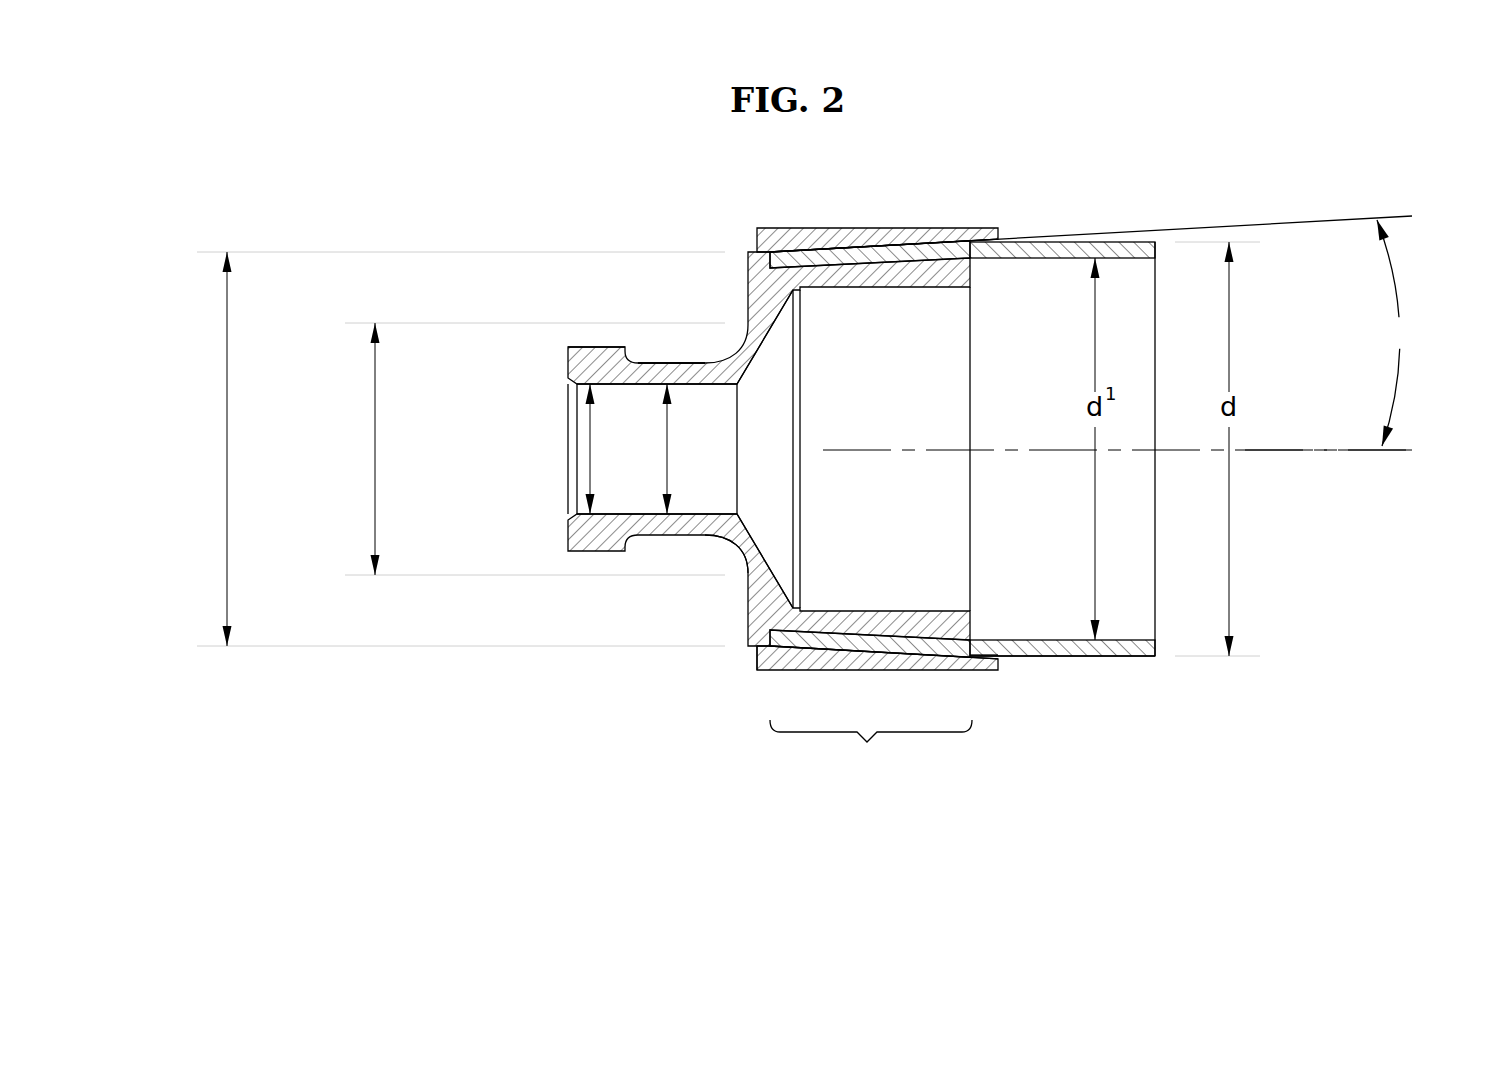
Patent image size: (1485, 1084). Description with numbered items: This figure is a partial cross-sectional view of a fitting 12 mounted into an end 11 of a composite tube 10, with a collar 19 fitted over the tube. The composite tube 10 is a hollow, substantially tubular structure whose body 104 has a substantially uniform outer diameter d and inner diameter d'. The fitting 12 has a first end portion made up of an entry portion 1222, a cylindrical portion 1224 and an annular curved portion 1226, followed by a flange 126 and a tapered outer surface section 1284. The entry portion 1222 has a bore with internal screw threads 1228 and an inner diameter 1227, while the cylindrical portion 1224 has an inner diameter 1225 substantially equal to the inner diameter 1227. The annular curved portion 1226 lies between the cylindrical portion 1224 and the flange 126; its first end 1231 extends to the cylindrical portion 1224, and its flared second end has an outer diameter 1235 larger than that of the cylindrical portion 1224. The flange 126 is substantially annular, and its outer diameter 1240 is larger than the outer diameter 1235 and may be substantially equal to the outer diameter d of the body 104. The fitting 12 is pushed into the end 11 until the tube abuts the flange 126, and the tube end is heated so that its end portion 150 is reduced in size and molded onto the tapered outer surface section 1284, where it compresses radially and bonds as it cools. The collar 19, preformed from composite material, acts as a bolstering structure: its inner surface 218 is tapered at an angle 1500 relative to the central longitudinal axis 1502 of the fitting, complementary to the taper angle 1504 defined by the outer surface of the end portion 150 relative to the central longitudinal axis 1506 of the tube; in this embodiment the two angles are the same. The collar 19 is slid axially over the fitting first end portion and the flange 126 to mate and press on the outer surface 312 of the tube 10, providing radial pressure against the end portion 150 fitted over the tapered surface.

The composite tube 10 is at (1138, 246).
The end of the composite tube 11 is at (772, 257).
The fitting 12 is at (631, 596).
The collar 19 is at (884, 236).
The body of the composite tube 104 is at (1045, 658).
The flange 126 is at (751, 250).
The end portion of the tube 150 is at (867, 742).
The inner surface of the collar 218 is at (867, 246).
The outer surface of the tube 312 is at (858, 656).
The entry portion 1222 is at (592, 346).
The cylindrical portion 1224 is at (675, 363).
The inner diameter of the cylindrical portion 1225 is at (670, 450).
The annular curved portion 1226 is at (735, 548).
The inner diameter of the entry portion 1227 is at (590, 451).
The internal screw threads 1228 is at (630, 513).
The first end of the annular curved portion 1231 is at (706, 345).
The outer diameter of the annular curved portion second end 1235 is at (375, 448).
The outer diameter of the flange 1240 is at (227, 448).
The tapered outer surface section 1284 is at (845, 636).
The taper angle of the collar inner surface 1500 is at (1395, 333).
The central longitudinal axis of the fitting 1502 is at (1351, 480).
The taper angle of the tube end portion outer surface 1504 is at (1395, 333).
The central longitudinal axis of the tube 1506 is at (1260, 451).